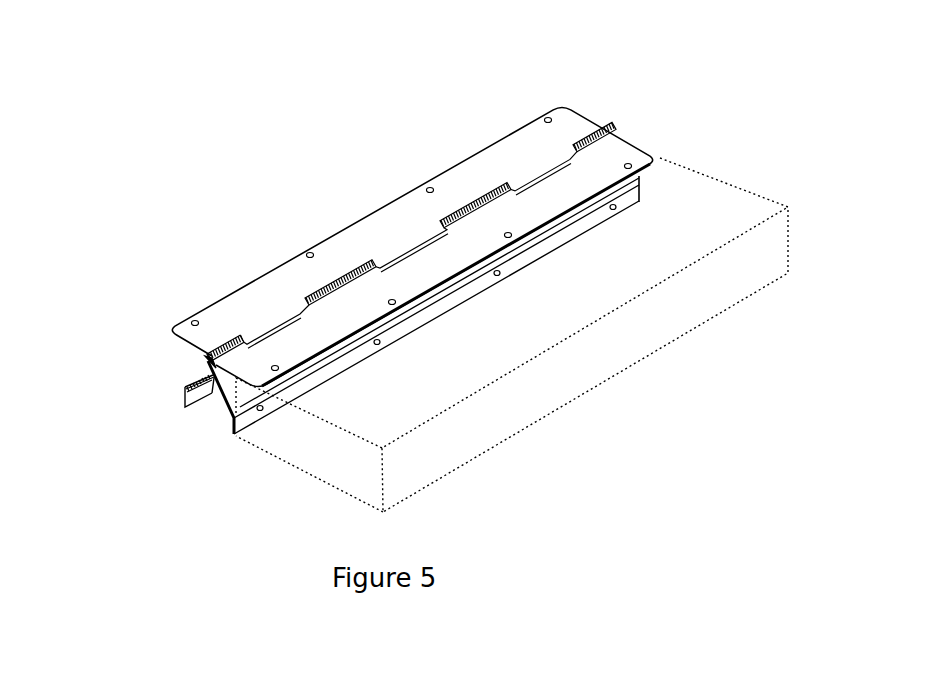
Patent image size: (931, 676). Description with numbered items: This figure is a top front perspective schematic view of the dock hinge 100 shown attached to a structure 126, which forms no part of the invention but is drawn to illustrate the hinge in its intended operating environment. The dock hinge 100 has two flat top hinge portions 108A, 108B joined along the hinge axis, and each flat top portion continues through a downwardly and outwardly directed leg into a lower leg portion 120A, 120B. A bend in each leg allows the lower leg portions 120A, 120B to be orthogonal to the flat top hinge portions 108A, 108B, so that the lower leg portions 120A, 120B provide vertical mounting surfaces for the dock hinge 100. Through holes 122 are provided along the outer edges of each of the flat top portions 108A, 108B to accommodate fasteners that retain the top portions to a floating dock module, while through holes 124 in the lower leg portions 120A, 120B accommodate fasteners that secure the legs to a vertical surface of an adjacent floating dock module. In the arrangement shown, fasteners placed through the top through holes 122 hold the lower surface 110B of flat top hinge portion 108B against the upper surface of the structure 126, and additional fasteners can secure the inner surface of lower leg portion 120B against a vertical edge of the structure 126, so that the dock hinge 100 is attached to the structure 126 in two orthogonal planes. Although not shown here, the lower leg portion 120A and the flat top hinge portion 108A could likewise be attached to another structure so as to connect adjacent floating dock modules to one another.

The dock hinge 100 is at (195, 58).
The flat top hinge portion 108A is at (381, 220).
The flat top hinge portion 108B is at (553, 198).
The lower surface of top flat hinge portion 110B is at (649, 180).
The lower leg portion 120A is at (187, 398).
The lower leg portion 120B is at (238, 428).
The through holes 122 is at (306, 252).
The through holes 124 is at (381, 346).
The structure 126 is at (592, 299).